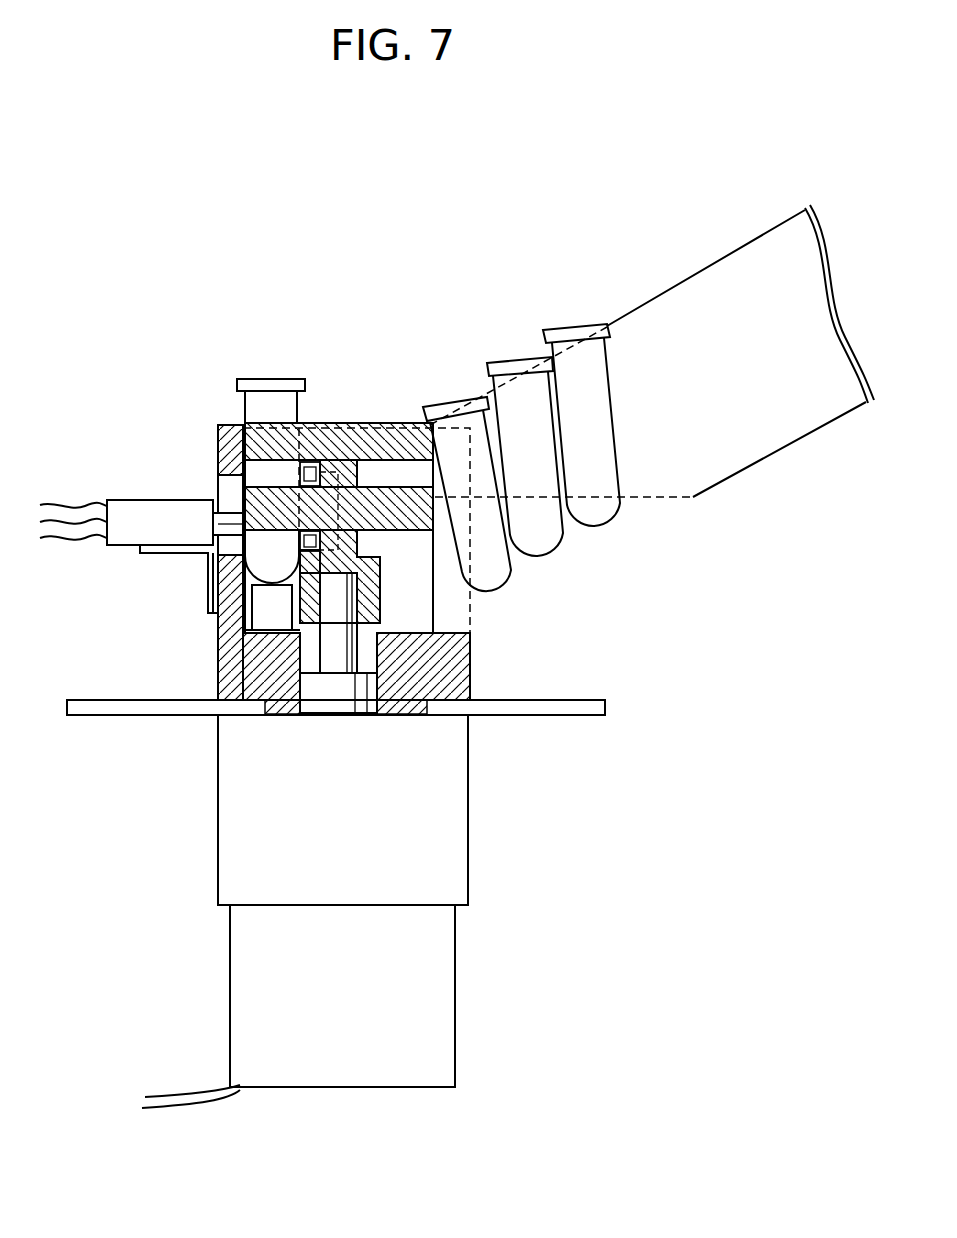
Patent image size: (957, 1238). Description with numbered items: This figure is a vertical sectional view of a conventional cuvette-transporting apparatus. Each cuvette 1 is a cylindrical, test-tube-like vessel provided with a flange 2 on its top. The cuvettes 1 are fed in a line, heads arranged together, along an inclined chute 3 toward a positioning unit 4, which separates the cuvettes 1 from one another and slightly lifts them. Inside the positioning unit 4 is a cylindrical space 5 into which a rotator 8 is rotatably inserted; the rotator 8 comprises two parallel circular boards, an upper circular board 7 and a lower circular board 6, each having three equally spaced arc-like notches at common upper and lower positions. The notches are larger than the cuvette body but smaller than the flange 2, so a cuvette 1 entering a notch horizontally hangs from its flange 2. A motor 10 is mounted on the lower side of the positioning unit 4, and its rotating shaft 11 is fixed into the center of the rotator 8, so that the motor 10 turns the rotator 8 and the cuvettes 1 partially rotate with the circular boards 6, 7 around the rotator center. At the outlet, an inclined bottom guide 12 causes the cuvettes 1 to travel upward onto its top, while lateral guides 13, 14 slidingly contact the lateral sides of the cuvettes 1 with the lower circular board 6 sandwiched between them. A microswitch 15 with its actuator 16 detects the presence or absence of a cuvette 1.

The cuvette 1 is at (261, 383).
The flange 2 is at (452, 395).
The chute 3 is at (695, 280).
The positioning unit 4 is at (218, 665).
The cylindrical space 5 is at (432, 598).
The lower circular board 6 is at (409, 422).
The circular board 7 is at (393, 420).
The rotator 8 is at (311, 422).
The motor 10 is at (432, 813).
The rotating shaft 11 is at (343, 647).
The bottom guide 12 is at (263, 605).
The lateral guide 13 is at (246, 350).
The lateral guide 14 is at (312, 462).
The microswitch 15 is at (145, 513).
The actuator 16 is at (217, 520).